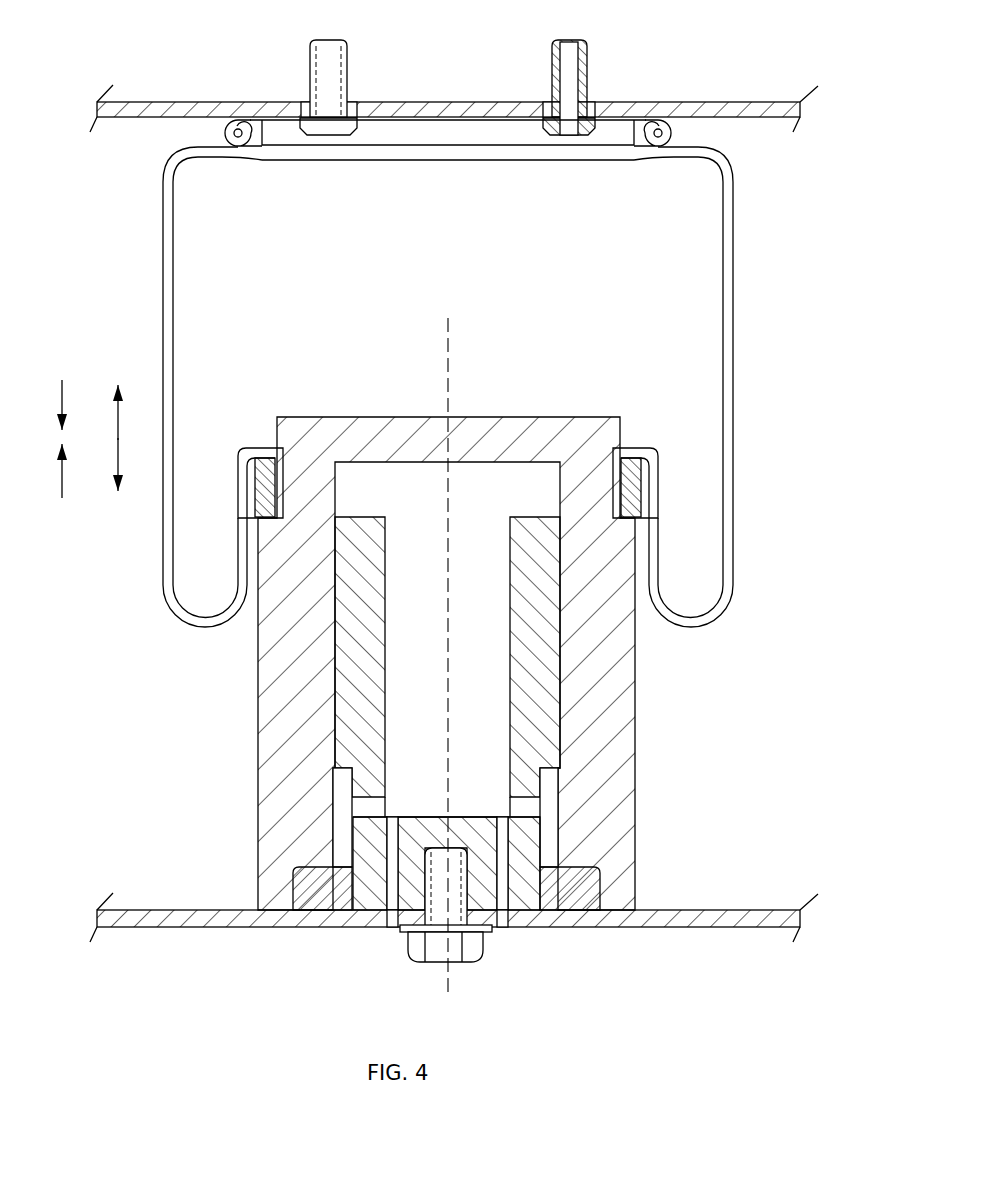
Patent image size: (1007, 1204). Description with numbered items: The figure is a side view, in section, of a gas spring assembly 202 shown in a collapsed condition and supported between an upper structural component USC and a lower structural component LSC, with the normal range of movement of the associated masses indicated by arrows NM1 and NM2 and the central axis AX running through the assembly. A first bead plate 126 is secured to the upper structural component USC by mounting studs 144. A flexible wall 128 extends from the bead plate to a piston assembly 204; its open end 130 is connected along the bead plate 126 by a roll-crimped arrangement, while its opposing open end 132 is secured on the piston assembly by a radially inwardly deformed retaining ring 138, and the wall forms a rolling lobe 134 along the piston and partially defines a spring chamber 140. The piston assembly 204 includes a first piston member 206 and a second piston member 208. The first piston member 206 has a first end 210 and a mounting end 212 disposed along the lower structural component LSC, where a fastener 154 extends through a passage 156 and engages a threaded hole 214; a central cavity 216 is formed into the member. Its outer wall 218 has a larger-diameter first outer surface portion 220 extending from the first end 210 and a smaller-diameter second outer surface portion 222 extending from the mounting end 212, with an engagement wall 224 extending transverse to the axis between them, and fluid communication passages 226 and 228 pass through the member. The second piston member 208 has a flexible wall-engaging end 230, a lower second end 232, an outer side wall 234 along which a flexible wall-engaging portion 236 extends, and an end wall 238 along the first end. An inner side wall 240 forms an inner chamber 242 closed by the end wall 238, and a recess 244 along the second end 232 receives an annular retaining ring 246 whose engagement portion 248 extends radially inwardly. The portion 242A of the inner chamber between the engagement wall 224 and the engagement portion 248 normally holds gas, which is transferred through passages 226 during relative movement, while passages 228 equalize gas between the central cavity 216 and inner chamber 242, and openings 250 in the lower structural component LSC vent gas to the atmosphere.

The upper structural component USC is at (205, 100).
The lower structural component LSC is at (213, 928).
The central axis AX is at (471, 641).
The arrow indicating normal movement NM1 is at (63, 390).
The arrow indicating normal movement NM2 is at (117, 437).
The first bead plate 126 is at (398, 118).
The flexible wall 128 is at (737, 360).
The open end 130 is at (640, 148).
The open end 132 is at (630, 446).
The rolling lobe 134 is at (207, 630).
The retaining ring 138 is at (633, 468).
The spring chamber 140 is at (200, 288).
The mounting studs 144 is at (308, 56).
The fastener 154 is at (441, 963).
The passage 156 is at (448, 918).
The gas spring assembly 202 is at (469, 412).
The piston assembly 204 is at (446, 665).
The first piston member 206 is at (335, 744).
The second piston member 208 is at (283, 704).
The first end 210 is at (535, 529).
The mounting end 212 is at (592, 922).
The threaded hole 214 is at (494, 898).
The central cavity 216 is at (470, 612).
The outer wall 218 is at (543, 821).
The first outer surface portion 220 is at (340, 508).
The second outer surface portion 222 is at (562, 783).
The engagement wall 224 is at (508, 785).
The fluid communication passages 226 is at (370, 797).
The fluid communication passages 228 is at (397, 837).
The flexible wall-engaging end 230 is at (250, 420).
The second end 232 is at (265, 889).
The outer side wall 234 is at (258, 650).
The flexible wall-engaging portion 236 is at (318, 427).
The end wall 238 is at (408, 428).
The inner side wall 240 is at (562, 440).
The inner chamber 242 is at (470, 443).
The portion of inner chamber 242A is at (340, 838).
The recess 244 is at (602, 887).
The annular retaining ring 246 is at (305, 900).
The engagement portion 248 is at (348, 895).
The openings 250 is at (393, 918).